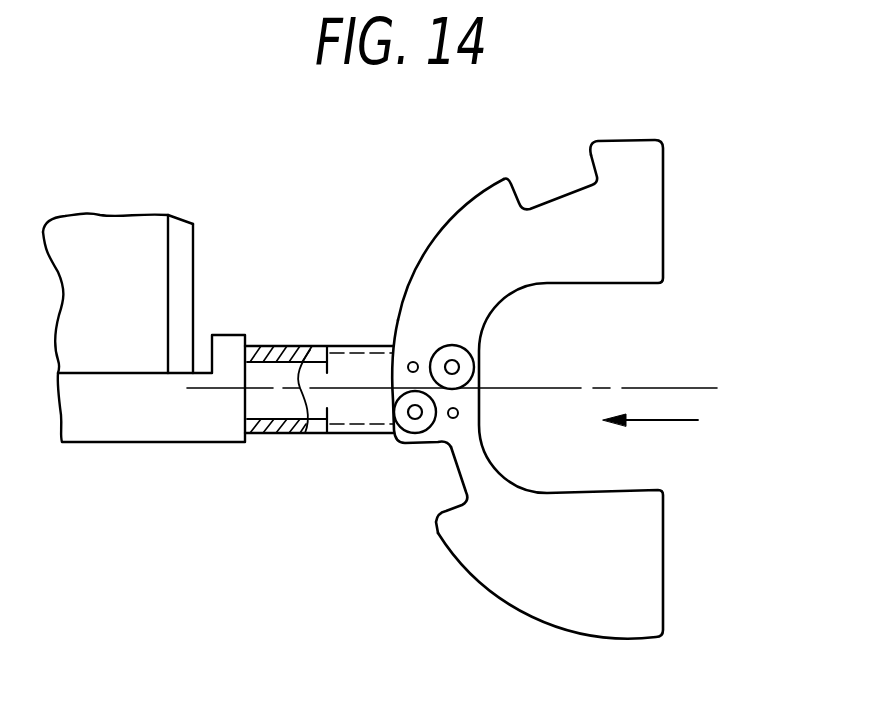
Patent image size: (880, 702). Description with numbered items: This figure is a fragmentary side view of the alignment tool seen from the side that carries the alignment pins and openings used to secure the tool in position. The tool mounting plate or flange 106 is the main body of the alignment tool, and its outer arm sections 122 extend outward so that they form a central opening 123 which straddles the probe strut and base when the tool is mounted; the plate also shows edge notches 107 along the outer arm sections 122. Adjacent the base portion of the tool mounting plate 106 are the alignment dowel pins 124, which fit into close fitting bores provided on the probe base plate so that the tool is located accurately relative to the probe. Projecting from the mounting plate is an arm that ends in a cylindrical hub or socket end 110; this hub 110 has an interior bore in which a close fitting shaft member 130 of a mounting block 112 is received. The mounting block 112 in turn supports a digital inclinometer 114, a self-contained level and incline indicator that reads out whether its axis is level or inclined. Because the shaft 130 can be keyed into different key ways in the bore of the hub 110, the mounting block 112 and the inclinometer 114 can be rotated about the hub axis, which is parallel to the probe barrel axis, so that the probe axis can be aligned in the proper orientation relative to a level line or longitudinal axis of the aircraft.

The tool mounting plate or flange 106 is at (497, 567).
The notch 107 is at (543, 182).
The hub or socket end 110 is at (270, 435).
The mounting block 112 is at (158, 428).
The digital inclinometer 114 is at (123, 242).
The outer arm sections 122 is at (633, 252).
The central opening 123 is at (678, 422).
The alignment dowel pins 124 is at (409, 362).
The shaft member 130 is at (263, 386).